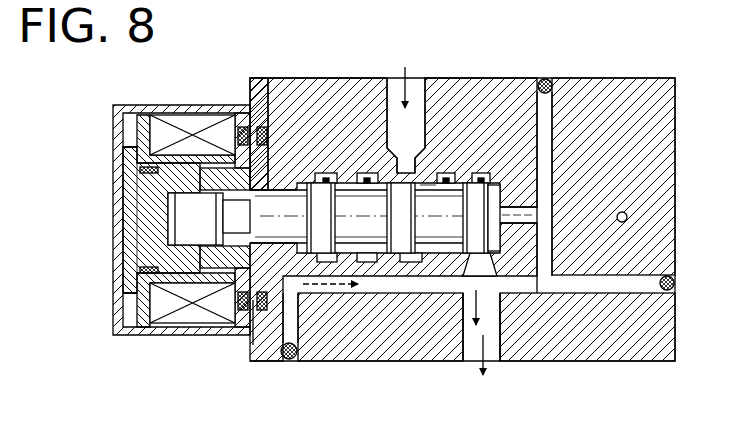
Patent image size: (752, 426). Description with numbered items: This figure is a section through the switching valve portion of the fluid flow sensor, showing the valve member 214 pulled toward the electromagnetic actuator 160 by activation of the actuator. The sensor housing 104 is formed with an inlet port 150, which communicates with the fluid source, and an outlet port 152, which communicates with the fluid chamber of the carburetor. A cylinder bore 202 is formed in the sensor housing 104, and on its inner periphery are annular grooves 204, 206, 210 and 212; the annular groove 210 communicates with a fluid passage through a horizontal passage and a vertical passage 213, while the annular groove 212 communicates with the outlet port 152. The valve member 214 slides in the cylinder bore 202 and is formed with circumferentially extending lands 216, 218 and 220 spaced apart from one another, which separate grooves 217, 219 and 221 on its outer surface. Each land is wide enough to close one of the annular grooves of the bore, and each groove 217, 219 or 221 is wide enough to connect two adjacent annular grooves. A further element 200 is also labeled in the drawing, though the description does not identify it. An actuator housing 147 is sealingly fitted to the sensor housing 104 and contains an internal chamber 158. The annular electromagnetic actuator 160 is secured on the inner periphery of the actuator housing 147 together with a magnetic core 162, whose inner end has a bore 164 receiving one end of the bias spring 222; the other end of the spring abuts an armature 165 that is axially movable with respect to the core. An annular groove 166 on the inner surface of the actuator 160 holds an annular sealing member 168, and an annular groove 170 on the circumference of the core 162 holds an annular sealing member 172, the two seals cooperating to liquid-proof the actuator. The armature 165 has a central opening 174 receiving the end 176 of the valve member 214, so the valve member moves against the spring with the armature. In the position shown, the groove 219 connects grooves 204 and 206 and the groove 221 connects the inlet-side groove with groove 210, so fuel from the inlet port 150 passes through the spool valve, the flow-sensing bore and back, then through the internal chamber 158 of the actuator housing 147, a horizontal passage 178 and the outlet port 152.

The sensor housing 104 is at (632, 78).
The actuator housing 147 is at (168, 113).
The inlet port 150 is at (415, 90).
The outlet port 152 is at (495, 358).
The internal chamber 158 is at (218, 178).
The electromagnetic actuator 160 is at (160, 107).
The magnetic core 162 is at (135, 223).
The bore 164 is at (135, 228).
The armature 165 is at (150, 176).
The annular groove 166 is at (258, 322).
The annular sealing member 168 is at (283, 354).
The annular groove 170 is at (142, 272).
The annular sealing member 172 is at (200, 262).
The central opening 174 is at (232, 240).
The end of the valve member 176 is at (233, 208).
The horizontal passage 178 is at (402, 300).
The spool 200 is at (386, 90).
The cylinder bore 202 is at (455, 180).
The annular groove 204 is at (320, 173).
The annular groove 206 is at (367, 173).
The annular groove 210 is at (450, 173).
The annular groove 212 is at (483, 173).
The vertical passage 213 is at (628, 216).
The valve member 214 is at (260, 125).
The land 216 is at (312, 173).
The groove 217 is at (273, 185).
The land 218 is at (428, 185).
The groove 219 is at (372, 255).
The land 220 is at (485, 198).
The groove 221 is at (453, 255).
The bias spring 222 is at (172, 207).